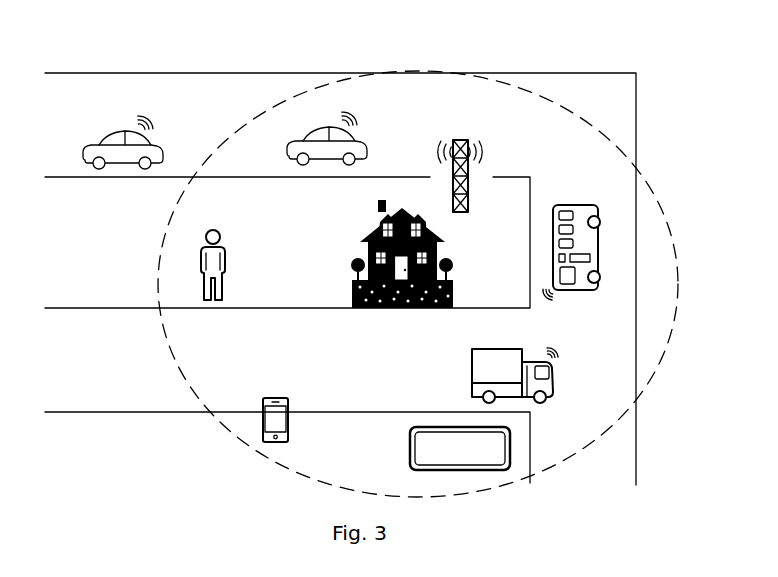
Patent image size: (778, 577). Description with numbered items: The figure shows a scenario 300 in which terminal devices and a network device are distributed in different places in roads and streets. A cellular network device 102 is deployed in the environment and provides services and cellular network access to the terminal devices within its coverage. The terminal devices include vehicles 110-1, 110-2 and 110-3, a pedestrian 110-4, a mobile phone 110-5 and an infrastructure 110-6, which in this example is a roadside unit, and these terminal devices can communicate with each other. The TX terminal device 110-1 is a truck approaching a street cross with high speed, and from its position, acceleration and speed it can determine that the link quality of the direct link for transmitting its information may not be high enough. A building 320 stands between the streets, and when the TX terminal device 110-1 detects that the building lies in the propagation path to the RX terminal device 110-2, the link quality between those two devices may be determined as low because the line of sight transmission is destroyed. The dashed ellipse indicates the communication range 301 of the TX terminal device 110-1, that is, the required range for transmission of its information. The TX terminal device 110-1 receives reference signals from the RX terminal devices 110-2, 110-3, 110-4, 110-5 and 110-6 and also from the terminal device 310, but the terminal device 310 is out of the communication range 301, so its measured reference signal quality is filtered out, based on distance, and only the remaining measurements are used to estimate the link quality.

The scenario 300 is at (209, 56).
The communication range 301 is at (157, 270).
The terminal device 310 is at (158, 144).
The cellular network device 102 is at (463, 140).
The house 320 is at (410, 203).
The TX terminal device 110-1 is at (498, 348).
The vehicle 110-2 is at (325, 113).
The vehicle 110-3 is at (588, 205).
The pedestrian 110-4 is at (226, 262).
The mobile phone 110-5 is at (280, 398).
The infrastructure 110-6 is at (410, 452).